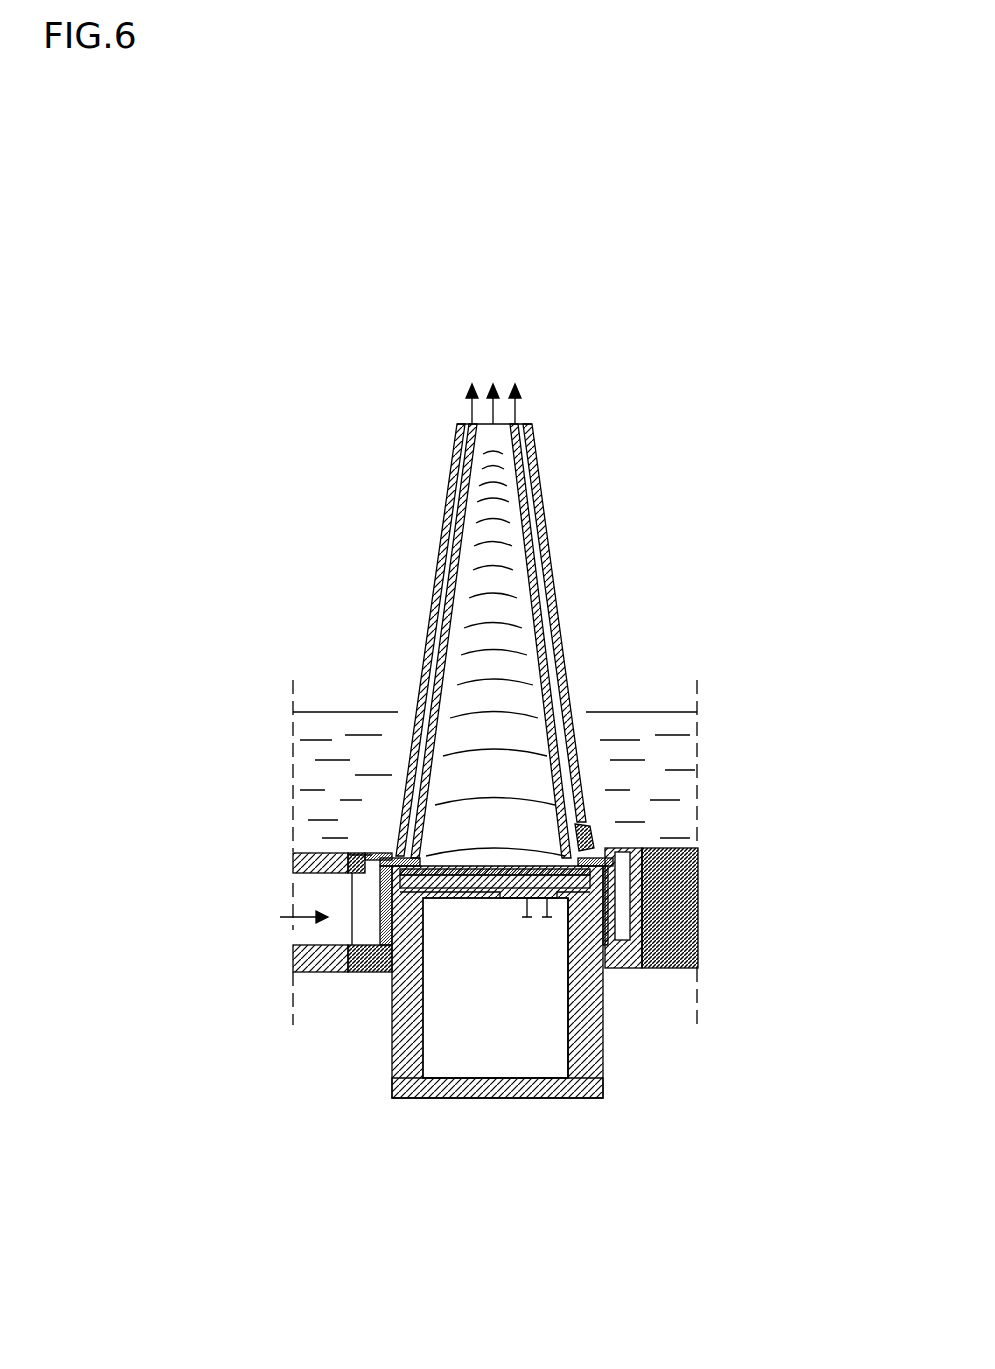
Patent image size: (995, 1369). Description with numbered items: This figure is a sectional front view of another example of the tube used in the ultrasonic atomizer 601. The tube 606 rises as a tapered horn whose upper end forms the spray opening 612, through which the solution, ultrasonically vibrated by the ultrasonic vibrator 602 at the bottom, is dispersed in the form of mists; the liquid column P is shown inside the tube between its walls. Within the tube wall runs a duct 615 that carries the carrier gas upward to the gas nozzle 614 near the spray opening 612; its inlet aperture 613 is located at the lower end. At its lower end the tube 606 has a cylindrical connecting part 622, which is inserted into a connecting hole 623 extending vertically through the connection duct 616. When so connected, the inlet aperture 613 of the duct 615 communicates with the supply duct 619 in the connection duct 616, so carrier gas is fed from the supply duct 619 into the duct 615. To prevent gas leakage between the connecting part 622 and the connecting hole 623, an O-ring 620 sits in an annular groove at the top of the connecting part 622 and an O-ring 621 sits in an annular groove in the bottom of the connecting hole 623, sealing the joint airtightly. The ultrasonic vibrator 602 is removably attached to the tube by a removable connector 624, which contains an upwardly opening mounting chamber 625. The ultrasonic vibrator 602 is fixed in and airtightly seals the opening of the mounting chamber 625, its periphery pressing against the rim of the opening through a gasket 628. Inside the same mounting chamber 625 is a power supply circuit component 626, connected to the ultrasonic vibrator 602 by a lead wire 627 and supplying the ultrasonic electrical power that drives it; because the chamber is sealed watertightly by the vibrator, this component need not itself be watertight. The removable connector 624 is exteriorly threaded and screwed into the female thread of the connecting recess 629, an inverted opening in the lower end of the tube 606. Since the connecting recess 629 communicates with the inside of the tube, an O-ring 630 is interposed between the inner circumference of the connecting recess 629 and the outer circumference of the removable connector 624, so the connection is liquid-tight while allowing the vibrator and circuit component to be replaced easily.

The ultrasonic atomizer 601 is at (405, 1160).
The ultrasonic vibrator 602 is at (462, 892).
The tube 606 is at (557, 477).
The spray opening 612 is at (500, 413).
The inlet aperture 613 is at (592, 828).
The gas nozzle 614 is at (458, 416).
The duct 615 is at (443, 588).
The connection duct 616 is at (655, 915).
The supply duct 619 is at (305, 893).
The O-ring 620 is at (358, 853).
The O-ring 621 is at (315, 975).
The connecting part 622 is at (630, 970).
The connecting hole 623 is at (650, 890).
The removable connector 624 is at (395, 1058).
The mounting chamber 625 is at (543, 1098).
The power supply circuit component 626 is at (488, 1098).
The lead wire 627 is at (527, 905).
The gasket 628 is at (410, 860).
The connecting recess 629 is at (385, 928).
The O-ring 630 is at (365, 975).
The liquid column P is at (493, 540).